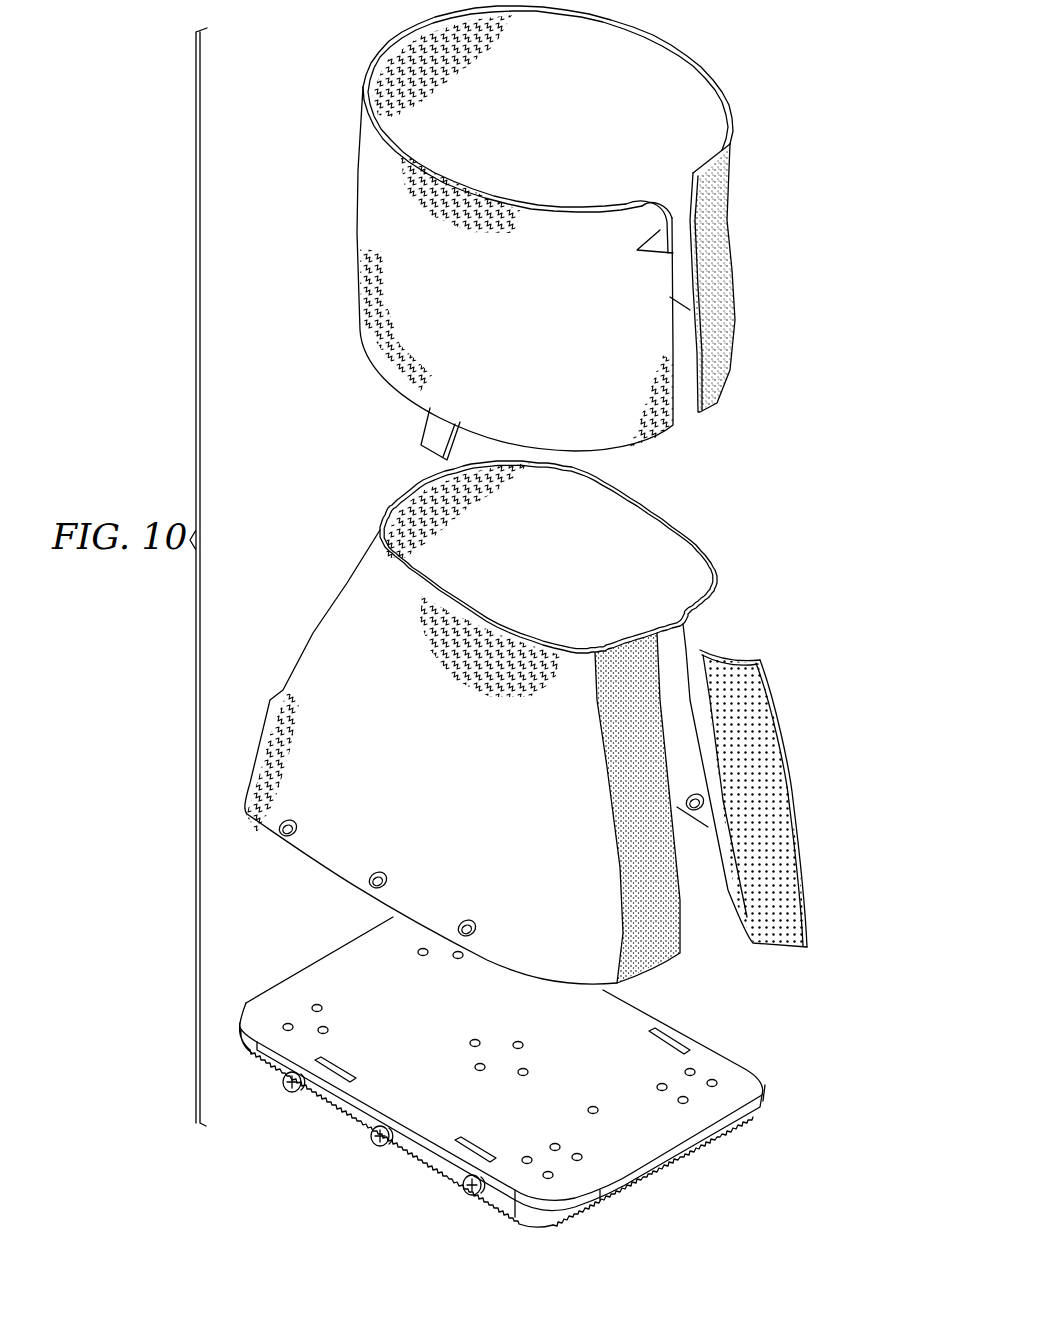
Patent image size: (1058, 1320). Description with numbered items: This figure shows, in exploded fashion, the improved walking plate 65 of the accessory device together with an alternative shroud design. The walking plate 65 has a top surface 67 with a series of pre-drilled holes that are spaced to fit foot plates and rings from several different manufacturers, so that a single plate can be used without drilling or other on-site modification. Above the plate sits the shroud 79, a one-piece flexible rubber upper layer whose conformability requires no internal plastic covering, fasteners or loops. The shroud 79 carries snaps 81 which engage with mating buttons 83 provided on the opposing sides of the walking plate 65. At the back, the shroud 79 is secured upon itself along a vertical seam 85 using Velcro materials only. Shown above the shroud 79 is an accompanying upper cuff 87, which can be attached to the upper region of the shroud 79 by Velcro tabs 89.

The walking plate 65 is at (524, 1072).
The top surface 67 is at (658, 1145).
The shroud 79 is at (565, 722).
The snaps 81 is at (282, 838).
The mating buttons 83 is at (292, 1083).
The vertical seam 85 is at (670, 928).
The upper cuff 87 is at (590, 235).
The Velcro tabs 89 is at (426, 432).